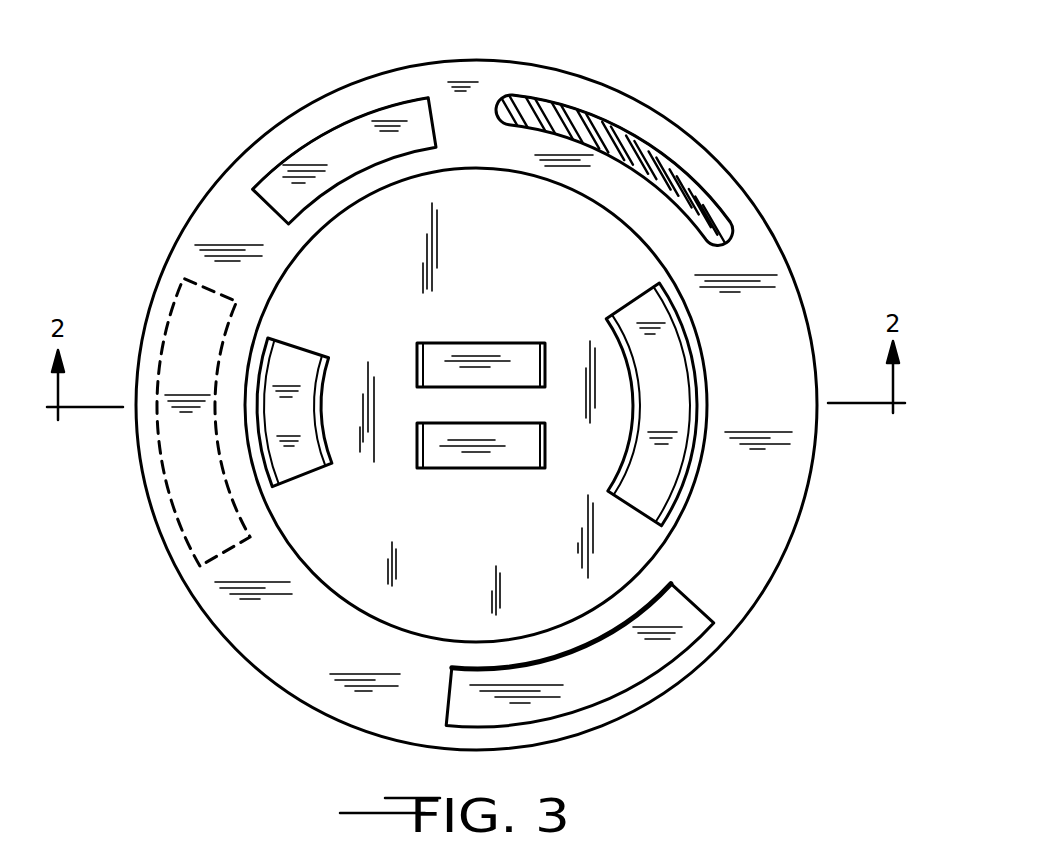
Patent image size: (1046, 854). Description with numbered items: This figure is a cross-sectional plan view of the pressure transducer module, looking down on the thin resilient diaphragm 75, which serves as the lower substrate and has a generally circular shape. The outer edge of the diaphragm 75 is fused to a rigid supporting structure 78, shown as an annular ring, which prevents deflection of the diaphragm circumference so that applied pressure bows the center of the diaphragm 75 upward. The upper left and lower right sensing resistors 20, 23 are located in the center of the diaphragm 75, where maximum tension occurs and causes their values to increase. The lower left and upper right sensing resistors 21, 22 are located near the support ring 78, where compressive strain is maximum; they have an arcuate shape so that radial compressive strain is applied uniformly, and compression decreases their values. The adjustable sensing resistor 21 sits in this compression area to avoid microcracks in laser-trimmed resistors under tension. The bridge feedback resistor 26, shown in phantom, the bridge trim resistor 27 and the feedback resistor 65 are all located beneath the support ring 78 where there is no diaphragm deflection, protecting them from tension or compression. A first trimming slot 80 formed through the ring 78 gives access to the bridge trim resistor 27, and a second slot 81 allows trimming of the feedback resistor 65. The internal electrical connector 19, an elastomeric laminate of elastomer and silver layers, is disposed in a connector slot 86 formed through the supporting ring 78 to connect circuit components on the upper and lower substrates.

The internal electrical connector 19 is at (553, 107).
The upper left sensing resistor 20 is at (487, 450).
The lower left sensing resistor 21 is at (680, 348).
The upper right sensing resistor 22 is at (298, 360).
The lower right sensing resistor 23 is at (465, 345).
The bridge feedback resistor 26 is at (168, 455).
The bridge trim resistor 27 is at (597, 692).
The feedback resistor 65 is at (308, 158).
The diaphragm 75 is at (583, 285).
The supporting structure 78 is at (733, 238).
The first trimming slot 80 is at (665, 670).
The second slot 81 is at (367, 110).
The connector slot 86 is at (665, 157).